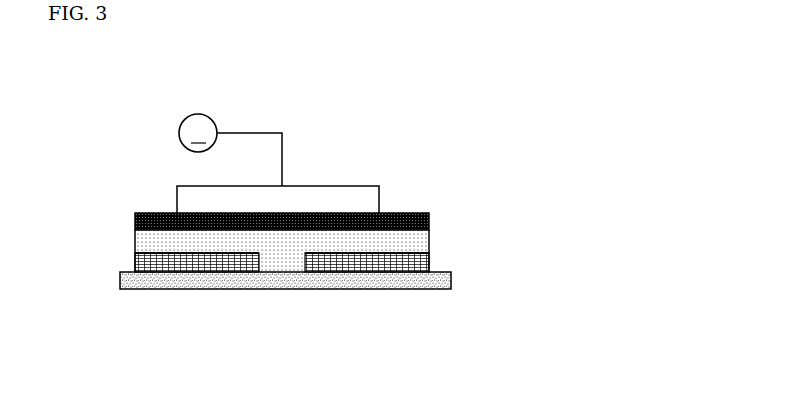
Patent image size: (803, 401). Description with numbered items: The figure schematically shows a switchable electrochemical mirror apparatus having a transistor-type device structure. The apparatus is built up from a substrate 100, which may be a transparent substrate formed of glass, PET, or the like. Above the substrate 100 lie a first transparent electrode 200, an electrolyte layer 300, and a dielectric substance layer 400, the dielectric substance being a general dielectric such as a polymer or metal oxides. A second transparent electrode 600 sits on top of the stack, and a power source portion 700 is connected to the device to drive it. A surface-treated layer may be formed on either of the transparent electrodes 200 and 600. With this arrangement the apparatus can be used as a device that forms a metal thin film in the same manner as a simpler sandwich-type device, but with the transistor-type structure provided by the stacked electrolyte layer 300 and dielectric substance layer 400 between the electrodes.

The substrate 100 is at (223, 289).
The first transparent electrode 200 is at (322, 263).
The electrolyte layer 300 is at (378, 246).
The dielectric substance layer 400 is at (133, 218).
The second transparent electrode 600 is at (323, 205).
The power source portion 700 is at (207, 115).